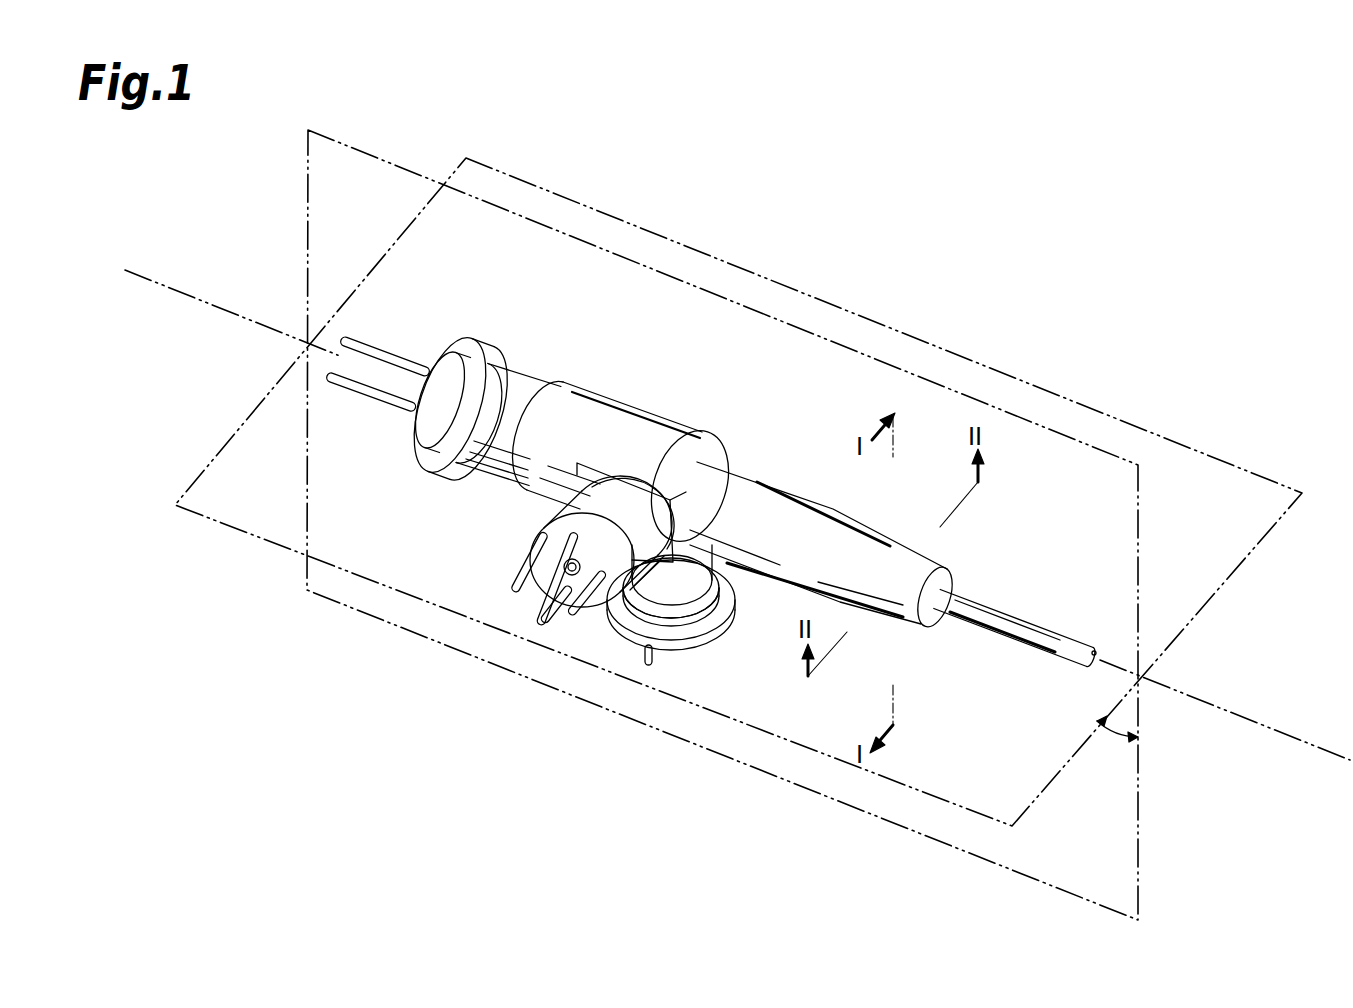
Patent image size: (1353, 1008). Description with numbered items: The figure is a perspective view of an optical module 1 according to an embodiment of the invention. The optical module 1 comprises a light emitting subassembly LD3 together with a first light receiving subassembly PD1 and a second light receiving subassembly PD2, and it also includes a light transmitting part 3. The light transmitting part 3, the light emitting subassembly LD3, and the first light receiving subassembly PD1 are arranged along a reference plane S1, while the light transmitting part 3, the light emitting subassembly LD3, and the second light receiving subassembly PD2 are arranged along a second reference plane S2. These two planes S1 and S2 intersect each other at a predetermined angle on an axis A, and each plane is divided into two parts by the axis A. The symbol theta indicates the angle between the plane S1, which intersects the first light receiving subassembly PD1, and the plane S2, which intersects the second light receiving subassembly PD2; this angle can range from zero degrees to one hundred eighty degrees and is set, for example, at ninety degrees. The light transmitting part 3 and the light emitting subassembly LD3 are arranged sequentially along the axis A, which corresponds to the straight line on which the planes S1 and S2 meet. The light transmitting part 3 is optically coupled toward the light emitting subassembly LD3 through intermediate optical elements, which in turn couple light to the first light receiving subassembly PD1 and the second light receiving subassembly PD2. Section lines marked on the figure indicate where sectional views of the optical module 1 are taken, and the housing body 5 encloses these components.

The optical module 1 is at (640, 396).
The light transmitting part 3 is at (1023, 630).
The housing 5 is at (677, 437).
The light emitting subassembly LD3 is at (530, 387).
The first light receiving subassembly PD1 is at (703, 635).
The second light receiving subassembly PD2 is at (533, 547).
The reference plane S1 is at (1142, 886).
The reference plane S2 is at (1218, 458).
The axis A is at (1257, 717).